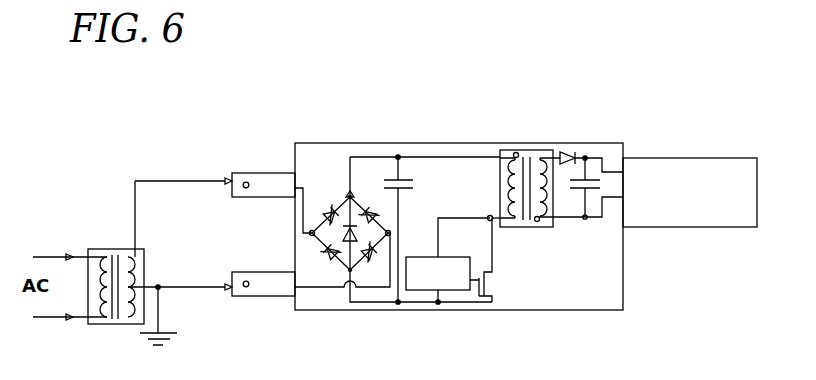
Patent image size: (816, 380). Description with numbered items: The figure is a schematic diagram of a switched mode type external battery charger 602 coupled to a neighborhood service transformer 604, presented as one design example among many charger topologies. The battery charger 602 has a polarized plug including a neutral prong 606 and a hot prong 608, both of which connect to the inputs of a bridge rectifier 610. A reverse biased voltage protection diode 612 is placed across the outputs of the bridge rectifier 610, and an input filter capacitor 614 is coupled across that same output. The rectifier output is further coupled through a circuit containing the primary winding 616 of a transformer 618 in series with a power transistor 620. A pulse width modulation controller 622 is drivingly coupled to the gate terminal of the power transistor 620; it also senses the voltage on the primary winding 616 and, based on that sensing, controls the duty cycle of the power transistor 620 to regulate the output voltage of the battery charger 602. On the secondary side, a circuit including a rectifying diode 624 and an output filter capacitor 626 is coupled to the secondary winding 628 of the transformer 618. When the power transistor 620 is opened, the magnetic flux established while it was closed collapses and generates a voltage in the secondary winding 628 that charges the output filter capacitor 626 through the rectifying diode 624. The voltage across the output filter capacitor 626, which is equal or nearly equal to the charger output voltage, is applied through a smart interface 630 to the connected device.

The external battery charger 602 is at (459, 226).
The neighborhood service transformer 604 is at (117, 248).
The neutral prong 606 is at (238, 296).
The hot prong 608 is at (250, 173).
The bridge rectifier 610 is at (345, 200).
The reverse biased voltage protection diode 612 is at (351, 195).
The input filter capacitor 614 is at (400, 176).
The primary winding 616 is at (508, 195).
The transformer 618 is at (540, 151).
The power transistor 620 is at (478, 293).
The PWM controller 622 is at (405, 310).
The rectifying diode 624 is at (568, 150).
The output filter capacitor 626 is at (597, 174).
The secondary winding 628 is at (538, 222).
The smart interface 630 is at (685, 158).